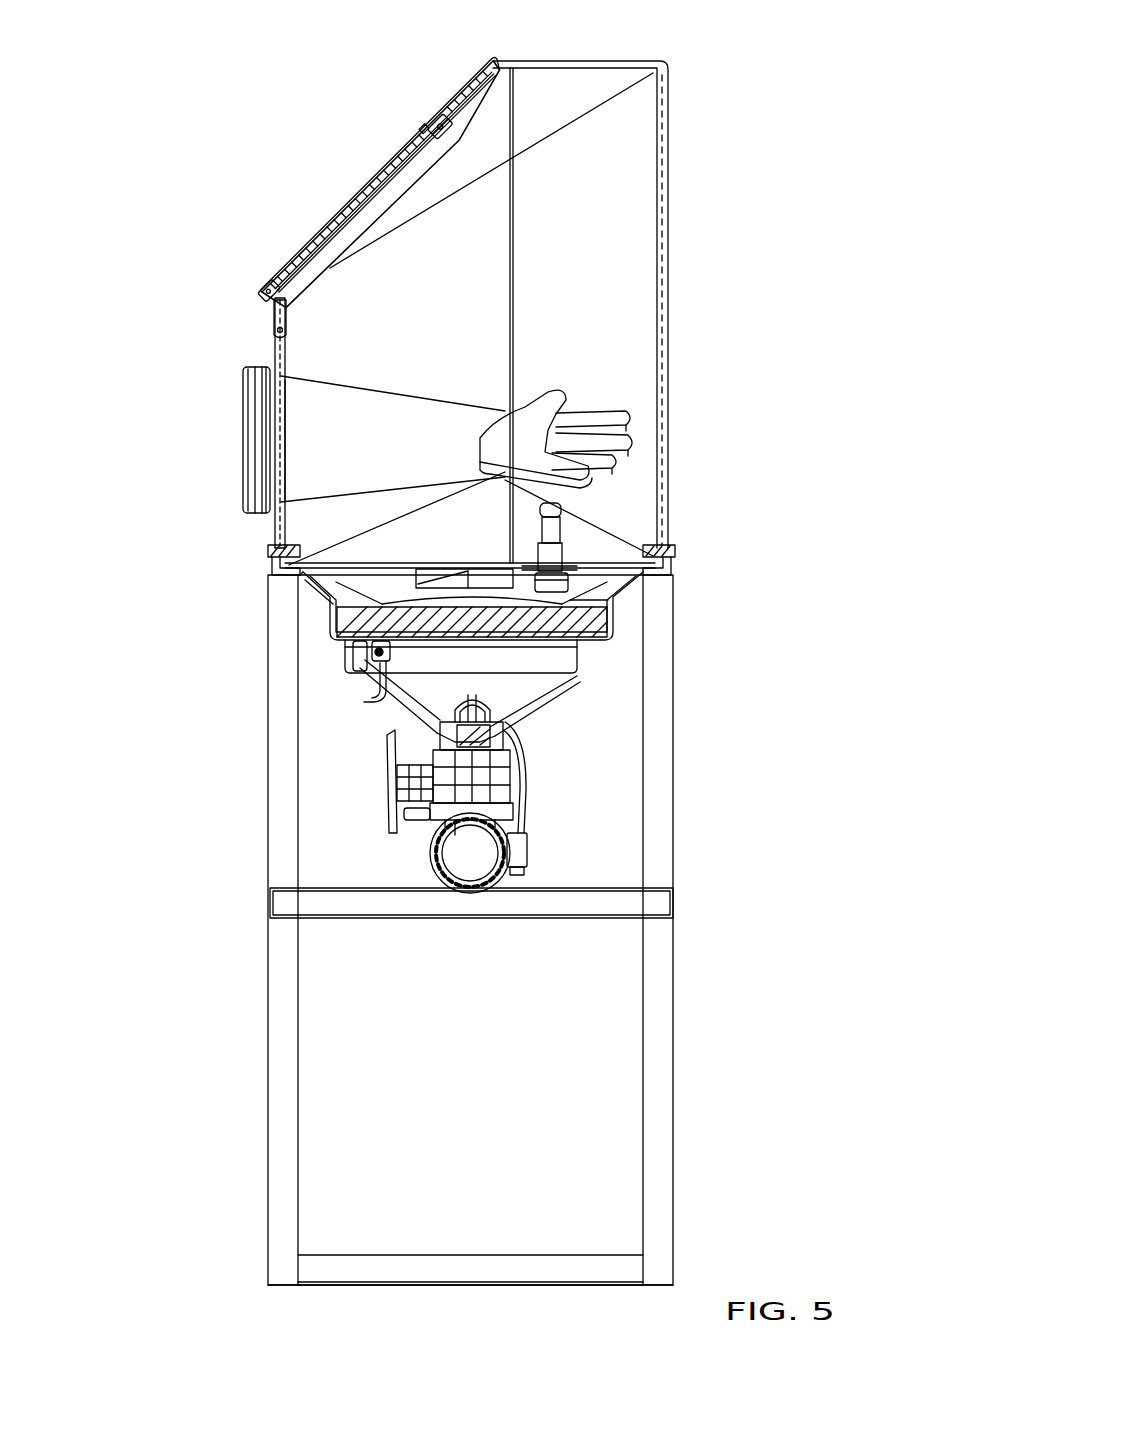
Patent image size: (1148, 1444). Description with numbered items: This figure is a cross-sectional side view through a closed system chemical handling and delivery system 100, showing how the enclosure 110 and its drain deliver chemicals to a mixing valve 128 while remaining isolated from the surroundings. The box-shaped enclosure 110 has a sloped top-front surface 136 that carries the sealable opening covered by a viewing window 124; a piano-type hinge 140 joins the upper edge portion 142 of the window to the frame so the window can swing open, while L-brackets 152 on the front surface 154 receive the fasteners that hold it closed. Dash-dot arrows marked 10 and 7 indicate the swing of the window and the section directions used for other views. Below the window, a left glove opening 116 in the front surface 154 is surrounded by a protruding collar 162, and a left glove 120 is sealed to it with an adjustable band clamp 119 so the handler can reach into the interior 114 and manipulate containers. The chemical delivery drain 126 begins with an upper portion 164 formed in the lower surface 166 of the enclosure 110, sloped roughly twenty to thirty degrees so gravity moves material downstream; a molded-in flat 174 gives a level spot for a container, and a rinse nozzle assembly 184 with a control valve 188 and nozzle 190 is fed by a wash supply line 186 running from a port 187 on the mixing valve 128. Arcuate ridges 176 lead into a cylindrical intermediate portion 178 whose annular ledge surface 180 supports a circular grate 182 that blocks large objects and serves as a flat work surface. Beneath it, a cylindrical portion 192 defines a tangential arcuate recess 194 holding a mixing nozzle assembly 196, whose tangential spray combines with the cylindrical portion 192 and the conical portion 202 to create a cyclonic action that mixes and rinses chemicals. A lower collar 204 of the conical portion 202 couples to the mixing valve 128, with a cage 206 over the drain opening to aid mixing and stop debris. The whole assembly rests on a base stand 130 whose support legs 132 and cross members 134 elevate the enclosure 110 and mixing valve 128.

The section line 7- 7 is at (288, 325).
The lid opening direction 10 is at (288, 325).
The closed system chemical handling and delivery system 100 is at (773, 97).
The enclosure 110 is at (668, 240).
The interior 114 is at (604, 251).
The left glove opening 116 is at (274, 503).
The adjustable band clamp 119 is at (245, 400).
The left glove 120 is at (451, 444).
The viewing window 124 is at (356, 205).
The chemical delivery drain 126 is at (623, 605).
The mixing valve 128 is at (382, 822).
The base stand 130 is at (228, 1133).
The support legs 132 is at (676, 1105).
The cross members 134 is at (540, 918).
The sloped top-front surface 136 is at (489, 62).
The piano-type hinge 140 is at (438, 115).
The upper edge portion 142 is at (428, 133).
The L-brackets 152 is at (276, 332).
The front surface 154 is at (268, 556).
The collar 162 is at (283, 395).
The upper portion 164 is at (398, 578).
The lower surface 166 is at (333, 600).
The molded-in flat 174 is at (500, 569).
The arcuate ridges 176 is at (393, 582).
The intermediate portion 178 is at (612, 600).
The annular ledge surface 180 is at (624, 614).
The circular grate 182 is at (540, 640).
The rinse nozzle assembly 184 is at (577, 531).
The wash supply line 186 is at (528, 765).
The port 187 is at (527, 872).
The control valve 188 is at (540, 566).
The nozzle 190 is at (561, 506).
The cylindrical portion 192 is at (372, 700).
The arcuate recess 194 is at (392, 650).
The mixing nozzle assembly 196 is at (380, 705).
The conical portion 202 is at (525, 702).
The lower collar 204 is at (440, 742).
The cage 206 is at (490, 690).